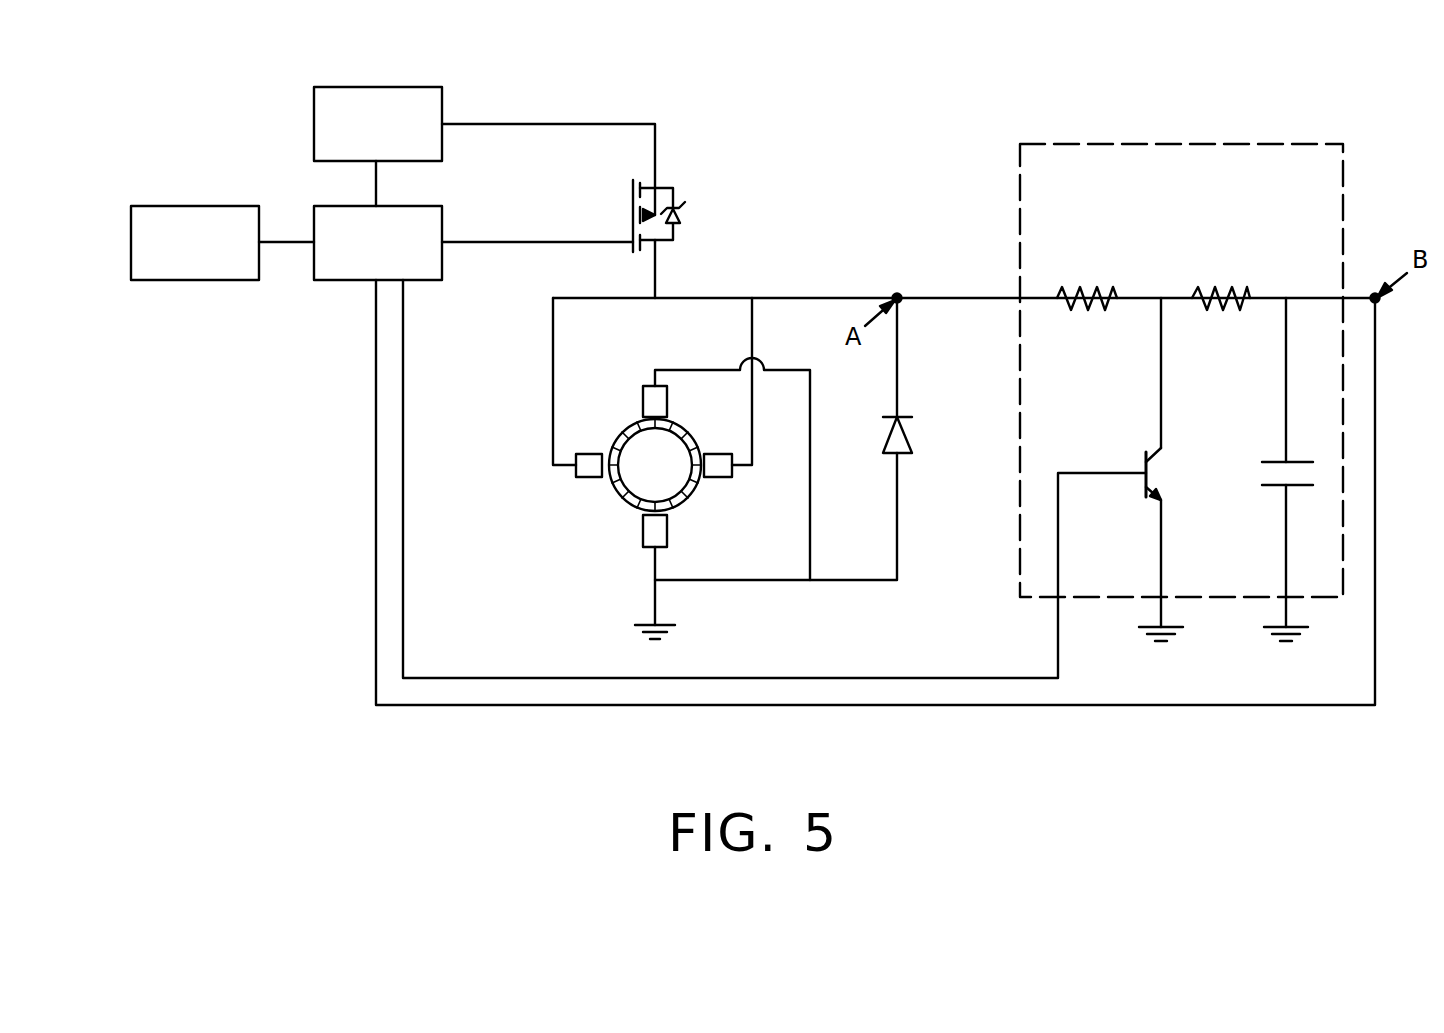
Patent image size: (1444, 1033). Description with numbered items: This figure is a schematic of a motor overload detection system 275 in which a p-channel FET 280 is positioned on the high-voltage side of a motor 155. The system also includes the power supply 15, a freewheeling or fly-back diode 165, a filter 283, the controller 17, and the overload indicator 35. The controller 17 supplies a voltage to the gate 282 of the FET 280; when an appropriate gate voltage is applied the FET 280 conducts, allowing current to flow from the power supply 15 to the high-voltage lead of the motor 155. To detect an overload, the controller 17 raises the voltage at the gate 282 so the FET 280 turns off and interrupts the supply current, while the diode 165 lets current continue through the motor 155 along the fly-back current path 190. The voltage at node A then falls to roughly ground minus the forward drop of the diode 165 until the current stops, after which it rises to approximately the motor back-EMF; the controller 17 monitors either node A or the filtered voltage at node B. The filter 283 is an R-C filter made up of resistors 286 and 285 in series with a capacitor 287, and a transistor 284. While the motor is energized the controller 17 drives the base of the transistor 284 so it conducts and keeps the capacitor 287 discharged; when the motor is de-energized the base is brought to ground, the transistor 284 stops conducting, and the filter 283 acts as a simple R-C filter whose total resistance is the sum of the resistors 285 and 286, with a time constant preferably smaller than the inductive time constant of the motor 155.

The motor overload detection system 275 is at (317, 732).
The power supply 15 is at (341, 150).
The controller 17 is at (353, 268).
The overload indicator 35 is at (168, 273).
The gate 282 is at (600, 240).
The p-channel FET 280 is at (693, 218).
The motor 155 is at (643, 491).
The freewheeling diode 165 is at (905, 427).
The fly-back current path 190 is at (899, 519).
The filter 283 is at (1181, 370).
The resistor 286 is at (1085, 290).
The resistor 285 is at (1218, 288).
The transistor 284 is at (1160, 472).
The capacitor 287 is at (1279, 458).